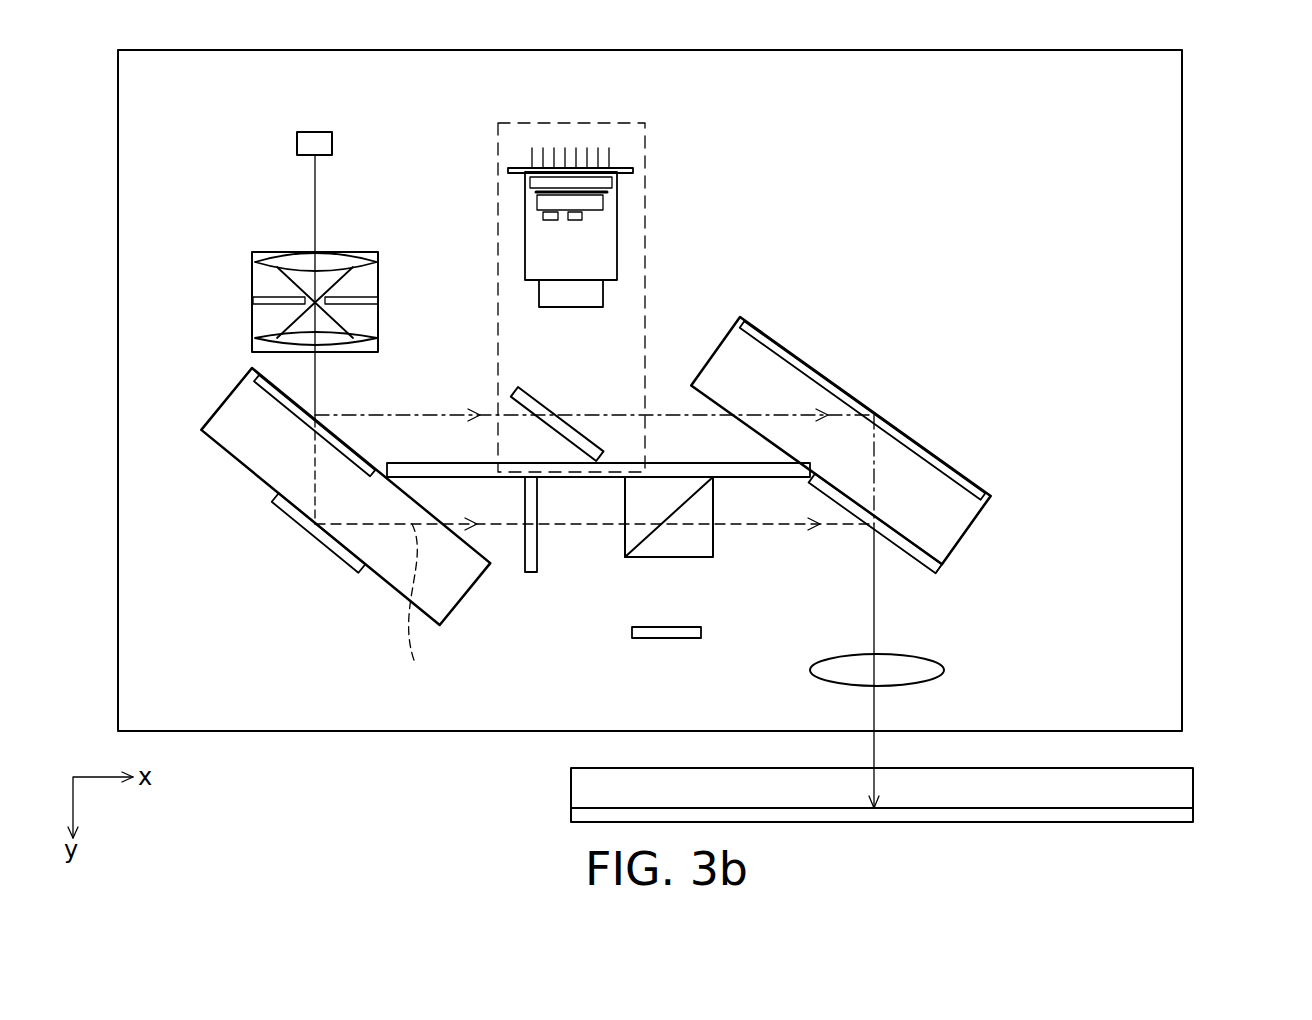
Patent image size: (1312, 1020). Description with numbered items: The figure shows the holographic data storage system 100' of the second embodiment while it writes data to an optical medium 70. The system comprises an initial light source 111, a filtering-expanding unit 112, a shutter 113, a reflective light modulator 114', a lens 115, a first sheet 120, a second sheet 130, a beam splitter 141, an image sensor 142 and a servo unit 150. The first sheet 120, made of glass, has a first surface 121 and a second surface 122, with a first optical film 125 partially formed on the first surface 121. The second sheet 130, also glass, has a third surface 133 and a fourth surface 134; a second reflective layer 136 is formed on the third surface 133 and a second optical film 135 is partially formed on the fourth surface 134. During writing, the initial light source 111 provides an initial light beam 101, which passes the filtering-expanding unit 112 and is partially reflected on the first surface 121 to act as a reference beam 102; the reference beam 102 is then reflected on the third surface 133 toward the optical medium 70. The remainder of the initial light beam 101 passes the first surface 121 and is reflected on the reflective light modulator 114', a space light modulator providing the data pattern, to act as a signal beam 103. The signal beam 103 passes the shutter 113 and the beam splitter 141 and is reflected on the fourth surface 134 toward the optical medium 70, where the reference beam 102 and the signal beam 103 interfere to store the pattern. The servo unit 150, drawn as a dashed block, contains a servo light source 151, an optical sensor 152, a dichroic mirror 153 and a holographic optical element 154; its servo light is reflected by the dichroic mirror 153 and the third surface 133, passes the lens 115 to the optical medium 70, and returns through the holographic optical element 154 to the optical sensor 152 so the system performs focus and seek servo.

The holographic data storage system 100' is at (602, 390).
The initial light source 111 is at (318, 130).
The initial light beam 101 is at (315, 201).
The filtering-expanding unit 112 is at (252, 278).
The first optical film 125 is at (253, 358).
The first surface 121 is at (261, 385).
The second surface 122 is at (210, 434).
The reflective light modulator 114' is at (319, 570).
The signal beam 103 is at (419, 610).
The first sheet 120 is at (479, 598).
The shutter 113 is at (530, 575).
The reference beam 102 is at (443, 415).
The servo unit 150 is at (643, 255).
The servo light source 151 is at (590, 215).
The optical sensor 152 is at (543, 215).
The holographic optical element 154 is at (539, 296).
The dichroic mirror 153 is at (537, 395).
The beam splitter 141 is at (713, 548).
The image sensor 142 is at (701, 632).
The second sheet 130 is at (985, 525).
The second reflective layer 136 is at (927, 442).
The third surface 133 is at (973, 493).
The fourth surface 134 is at (938, 548).
The second optical film 135 is at (932, 570).
The lens 115 is at (944, 670).
The optical medium 70 is at (1193, 810).